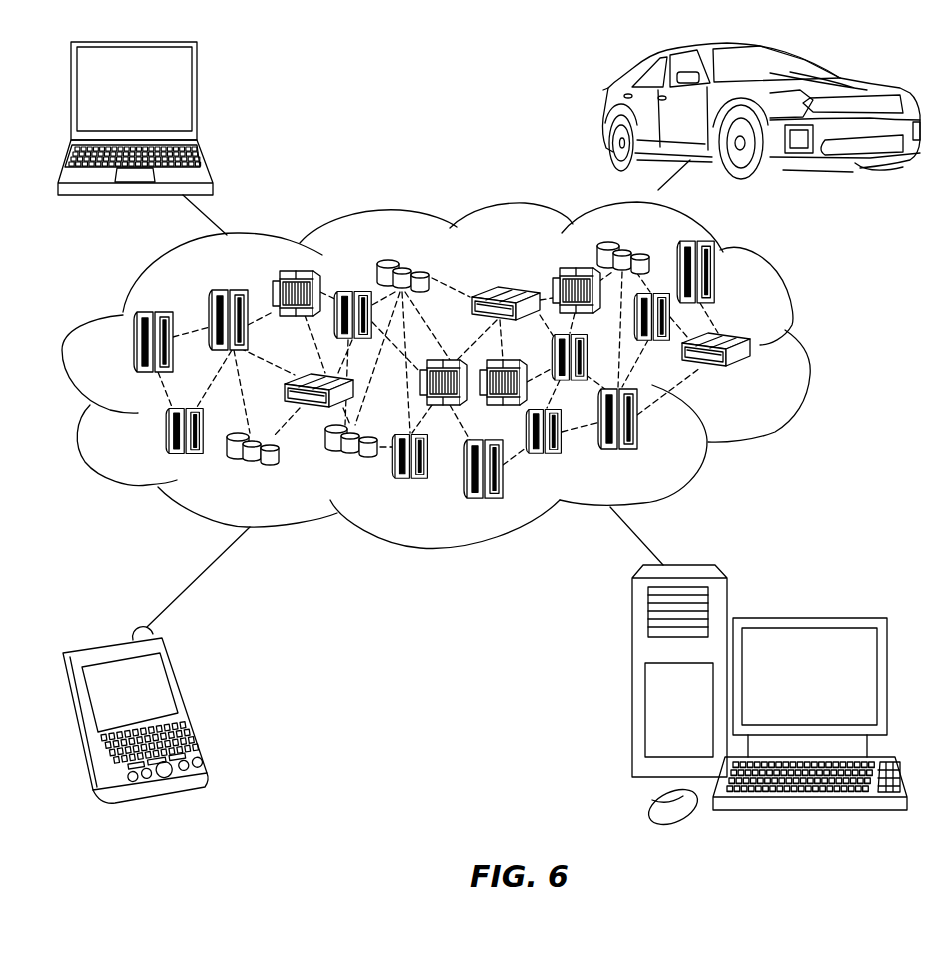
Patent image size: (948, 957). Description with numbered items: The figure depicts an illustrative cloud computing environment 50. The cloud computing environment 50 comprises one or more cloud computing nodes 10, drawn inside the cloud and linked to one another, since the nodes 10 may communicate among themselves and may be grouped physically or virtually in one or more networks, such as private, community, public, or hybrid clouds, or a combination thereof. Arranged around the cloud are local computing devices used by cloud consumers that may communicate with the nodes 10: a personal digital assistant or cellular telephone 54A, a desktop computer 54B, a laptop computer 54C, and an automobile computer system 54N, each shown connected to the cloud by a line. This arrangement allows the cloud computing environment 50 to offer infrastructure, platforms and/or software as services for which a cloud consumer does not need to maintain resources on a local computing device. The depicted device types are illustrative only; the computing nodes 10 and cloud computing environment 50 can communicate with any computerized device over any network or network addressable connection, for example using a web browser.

The cloud computing node 10 is at (752, 379).
The cloud computing environment 50 is at (808, 350).
The personal digital assistant or cellular telephone 54A is at (190, 703).
The desktop computer 54B is at (805, 618).
The laptop computer 54C is at (199, 99).
The automobile computer system 54N is at (603, 112).